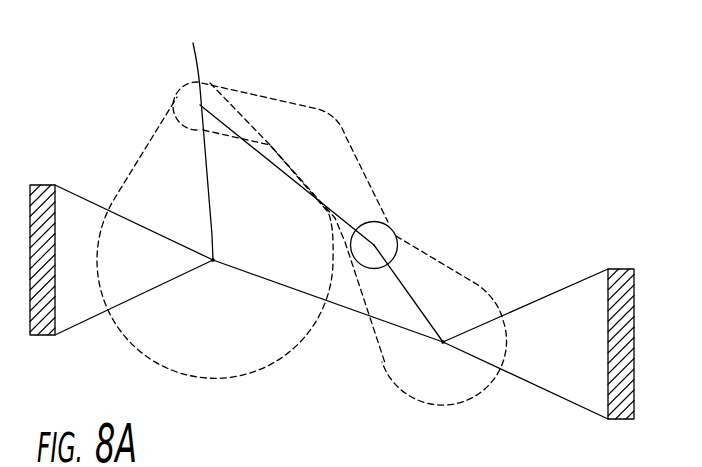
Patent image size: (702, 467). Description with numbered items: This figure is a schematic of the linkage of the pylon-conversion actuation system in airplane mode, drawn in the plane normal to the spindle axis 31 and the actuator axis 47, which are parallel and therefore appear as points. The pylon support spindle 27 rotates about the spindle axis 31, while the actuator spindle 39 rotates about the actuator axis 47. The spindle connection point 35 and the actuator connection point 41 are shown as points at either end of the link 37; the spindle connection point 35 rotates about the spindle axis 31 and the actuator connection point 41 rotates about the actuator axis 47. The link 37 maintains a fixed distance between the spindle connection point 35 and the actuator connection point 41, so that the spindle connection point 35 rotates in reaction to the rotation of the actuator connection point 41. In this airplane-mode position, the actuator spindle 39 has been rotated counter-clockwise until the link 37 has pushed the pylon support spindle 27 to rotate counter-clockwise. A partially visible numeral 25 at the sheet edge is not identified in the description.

The optical element 25 is at (328, 462).
The pylon support spindle 27 is at (243, 355).
The spindle axis 31 is at (213, 262).
The spindle connection point 35 is at (199, 136).
The link 37 is at (323, 130).
The actuator spindle 39 is at (473, 302).
The actuator connection point 41 is at (374, 244).
The actuator axis 47 is at (443, 342).